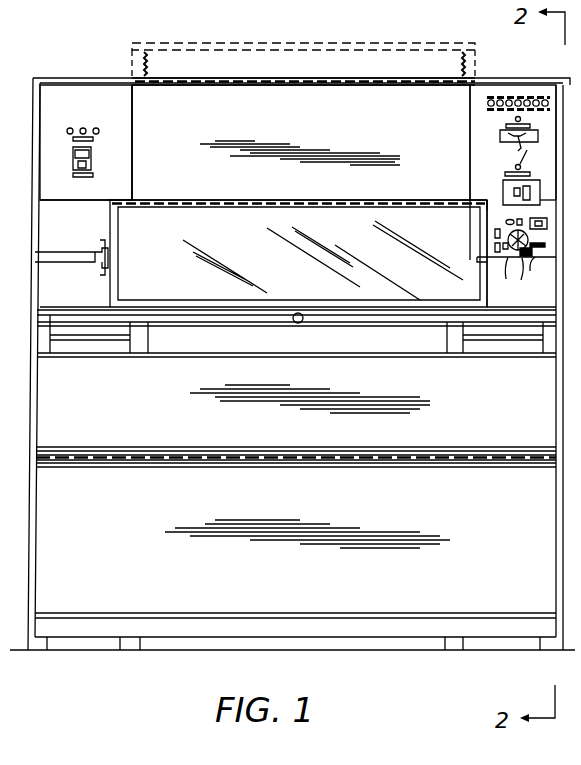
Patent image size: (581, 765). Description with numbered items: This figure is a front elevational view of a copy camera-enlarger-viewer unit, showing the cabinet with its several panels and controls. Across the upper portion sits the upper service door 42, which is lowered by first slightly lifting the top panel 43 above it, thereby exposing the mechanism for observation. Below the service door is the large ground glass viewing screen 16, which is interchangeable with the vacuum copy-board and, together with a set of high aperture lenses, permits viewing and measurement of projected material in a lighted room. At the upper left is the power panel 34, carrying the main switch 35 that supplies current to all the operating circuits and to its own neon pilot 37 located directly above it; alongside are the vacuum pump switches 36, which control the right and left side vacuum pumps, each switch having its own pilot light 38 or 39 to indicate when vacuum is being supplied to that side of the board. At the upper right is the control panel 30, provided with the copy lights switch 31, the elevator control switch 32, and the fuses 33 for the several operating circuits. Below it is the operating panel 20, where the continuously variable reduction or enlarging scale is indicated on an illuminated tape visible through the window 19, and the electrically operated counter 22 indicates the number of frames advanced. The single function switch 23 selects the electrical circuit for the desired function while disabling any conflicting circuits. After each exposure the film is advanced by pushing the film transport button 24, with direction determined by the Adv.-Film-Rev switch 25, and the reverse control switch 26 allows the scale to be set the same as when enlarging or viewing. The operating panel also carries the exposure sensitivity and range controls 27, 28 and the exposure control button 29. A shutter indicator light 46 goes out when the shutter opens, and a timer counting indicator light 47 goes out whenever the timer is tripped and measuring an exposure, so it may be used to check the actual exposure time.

The ground glass viewing screen 16 is at (136, 242).
The window 19 is at (543, 233).
The operating panel 20 is at (488, 213).
The counter 22 is at (503, 186).
The function switch 23 is at (509, 138).
The film transport button 24 is at (517, 282).
The Adv.-Film-Rev switch 25 is at (542, 271).
The reverse control switch 26 is at (534, 218).
The exposure sensitivity control 27 is at (505, 223).
The exposure range control 28 is at (530, 253).
The exposure control button 29 is at (486, 282).
The control panel 30 is at (485, 162).
The copy lights switch 31 is at (527, 150).
The elevator control switch 32 is at (515, 119).
The fuses 33 is at (538, 96).
The power panel 34 is at (52, 152).
The main switch 35 is at (91, 153).
The vacuum pump switches 36 is at (80, 178).
The neon pilot 37 is at (81, 128).
The pilot light 38 is at (67, 131).
The pilot light 39 is at (98, 131).
The upper service door 42 is at (302, 127).
The top panel 43 is at (318, 43).
The shutter indicator light 46 is at (495, 231).
The timer counting indicator light 47 is at (495, 247).